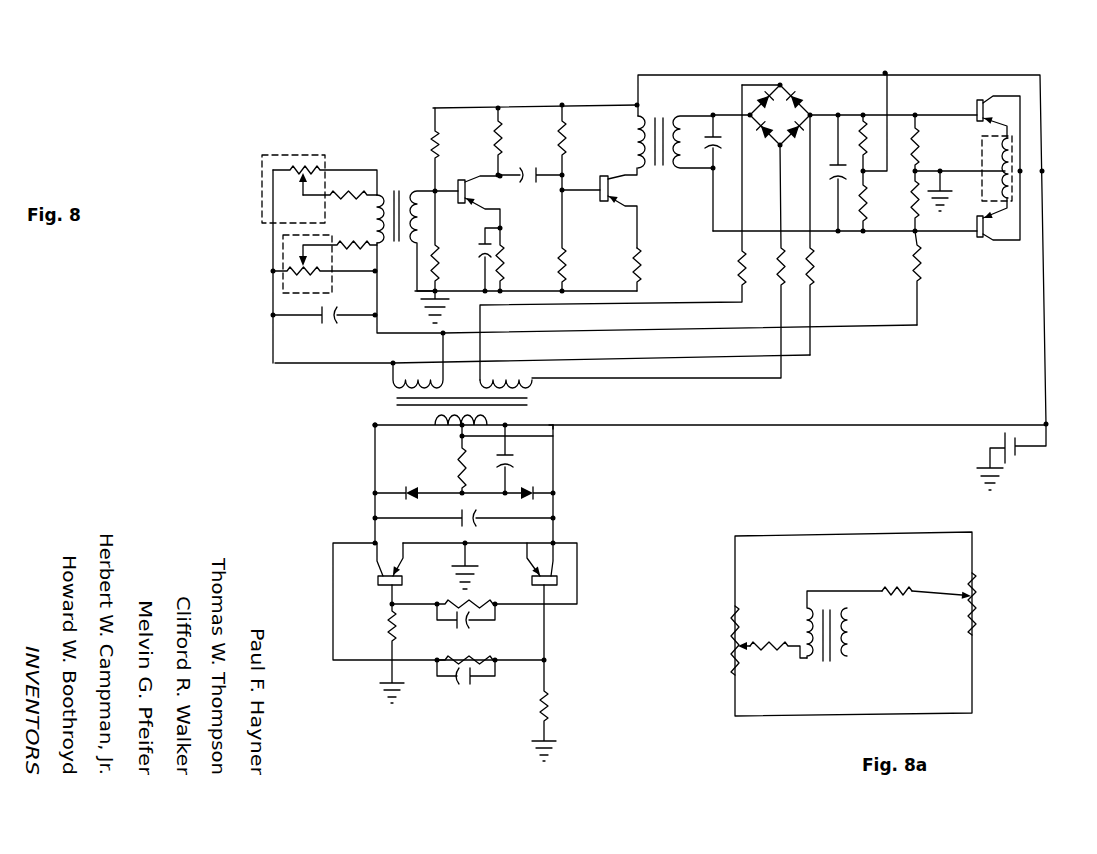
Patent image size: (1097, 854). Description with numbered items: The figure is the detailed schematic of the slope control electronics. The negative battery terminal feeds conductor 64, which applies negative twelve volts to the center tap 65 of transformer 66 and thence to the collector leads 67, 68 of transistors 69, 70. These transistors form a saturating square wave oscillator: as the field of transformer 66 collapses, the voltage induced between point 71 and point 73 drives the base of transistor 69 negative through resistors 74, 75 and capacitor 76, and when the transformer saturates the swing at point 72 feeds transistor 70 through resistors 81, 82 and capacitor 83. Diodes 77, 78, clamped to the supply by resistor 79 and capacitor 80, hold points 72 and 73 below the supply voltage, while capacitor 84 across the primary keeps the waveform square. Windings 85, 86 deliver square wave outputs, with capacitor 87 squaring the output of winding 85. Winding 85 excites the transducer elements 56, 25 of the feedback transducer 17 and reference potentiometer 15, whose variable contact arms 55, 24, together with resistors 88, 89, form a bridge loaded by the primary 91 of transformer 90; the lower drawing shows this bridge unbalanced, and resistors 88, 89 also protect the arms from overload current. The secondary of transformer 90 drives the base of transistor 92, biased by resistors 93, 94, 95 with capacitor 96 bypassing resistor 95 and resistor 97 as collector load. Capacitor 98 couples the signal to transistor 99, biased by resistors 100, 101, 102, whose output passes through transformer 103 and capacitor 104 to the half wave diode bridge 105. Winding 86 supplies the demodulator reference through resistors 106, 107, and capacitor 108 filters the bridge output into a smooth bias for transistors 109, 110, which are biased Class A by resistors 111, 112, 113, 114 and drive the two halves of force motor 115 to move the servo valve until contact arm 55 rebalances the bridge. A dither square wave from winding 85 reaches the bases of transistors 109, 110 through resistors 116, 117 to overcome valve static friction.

In FIG. 8, the reference potentiometer transducer 15 is at (264, 211).
In FIG. 8, the feedback transducer 17 is at (285, 297).
In FIG. 8, the variable contact arm 24 is at (308, 182).
In FIG. 8A, the variable contact arm 24 is at (740, 675).
In FIG. 8, the transducer element 25 is at (311, 170).
In FIG. 8A, the transducer element 25 is at (733, 635).
In FIG. 8, the variable contact arm 55 is at (300, 253).
In FIG. 8A, the variable contact arm 55 is at (944, 601).
In FIG. 8, the transducer element 56 is at (320, 276).
In FIG. 8A, the transducer element 56 is at (975, 620).
In FIG. 8, the conductor 64 is at (1048, 425).
In FIG. 8, the center tap 65 is at (455, 426).
In FIG. 8, the transformer 66 is at (476, 403).
In FIG. 8, the collector lead 67 is at (374, 478).
In FIG. 8, the collector lead 68 is at (553, 480).
In FIG. 8, the transistor 69 is at (378, 580).
In FIG. 8, the transistor 70 is at (531, 580).
In FIG. 8, the point 71 is at (461, 441).
In FIG. 8, the point 72 is at (374, 427).
In FIG. 8, the point 73 is at (554, 427).
In FIG. 8, the resistor 74 is at (454, 605).
In FIG. 8, the resistor 75 is at (395, 637).
In FIG. 8, the capacitor 76 is at (466, 628).
In FIG. 8, the diode 77 is at (529, 480).
In FIG. 8, the diode 78 is at (409, 490).
In FIG. 8, the resistor 79 is at (458, 479).
In FIG. 8, the capacitor 80 is at (497, 463).
In FIG. 8, the resistor 81 is at (477, 660).
In FIG. 8, the resistor 82 is at (550, 708).
In FIG. 8, the capacitor 83 is at (463, 689).
In FIG. 8, the capacitor 84 is at (461, 523).
In FIG. 8, the winding 85 is at (420, 387).
In FIG. 8, the winding 86 is at (503, 387).
In FIG. 8, the capacitor 87 is at (329, 326).
In FIG. 8, the resistor 88 is at (350, 246).
In FIG. 8A, the resistor 88 is at (897, 580).
In FIG. 8, the resistor 89 is at (349, 193).
In FIG. 8A, the resistor 89 is at (778, 641).
In FIG. 8, the transformer 90 is at (406, 230).
In FIG. 8A, the transformer 90 is at (826, 664).
In FIG. 8A, the transformer primary 91 is at (807, 633).
In FIG. 8, the transistor 92 is at (463, 185).
In FIG. 8, the resistor 93 is at (442, 257).
In FIG. 8, the resistor 94 is at (439, 141).
In FIG. 8, the resistor 95 is at (505, 271).
In FIG. 8, the capacitor 96 is at (479, 251).
In FIG. 8, the resistor 97 is at (502, 146).
In FIG. 8, the capacitor 98 is at (530, 188).
In FIG. 8, the transistor 99 is at (611, 175).
In FIG. 8, the resistor 100 is at (567, 273).
In FIG. 8, the resistor 101 is at (579, 147).
In FIG. 8, the resistor 102 is at (642, 273).
In FIG. 8, the transformer 103 is at (663, 168).
In FIG. 8, the capacitor 104 is at (711, 142).
In FIG. 8, the half wave diode bridge 105 is at (780, 115).
In FIG. 8, the resistor 106 is at (741, 269).
In FIG. 8, the resistor 107 is at (784, 264).
In FIG. 8, the capacitor 108 is at (828, 173).
In FIG. 8, the transistor 109 is at (980, 103).
In FIG. 8, the transistor 110 is at (981, 240).
In FIG. 8, the resistor 111 is at (862, 142).
In FIG. 8, the resistor 112 is at (866, 210).
In FIG. 8, the resistor 113 is at (919, 146).
In FIG. 8, the resistor 114 is at (911, 199).
In FIG. 8, the force motor 115 is at (1010, 161).
In FIG. 8, the resistor 116 is at (814, 266).
In FIG. 8, the resistor 117 is at (919, 266).